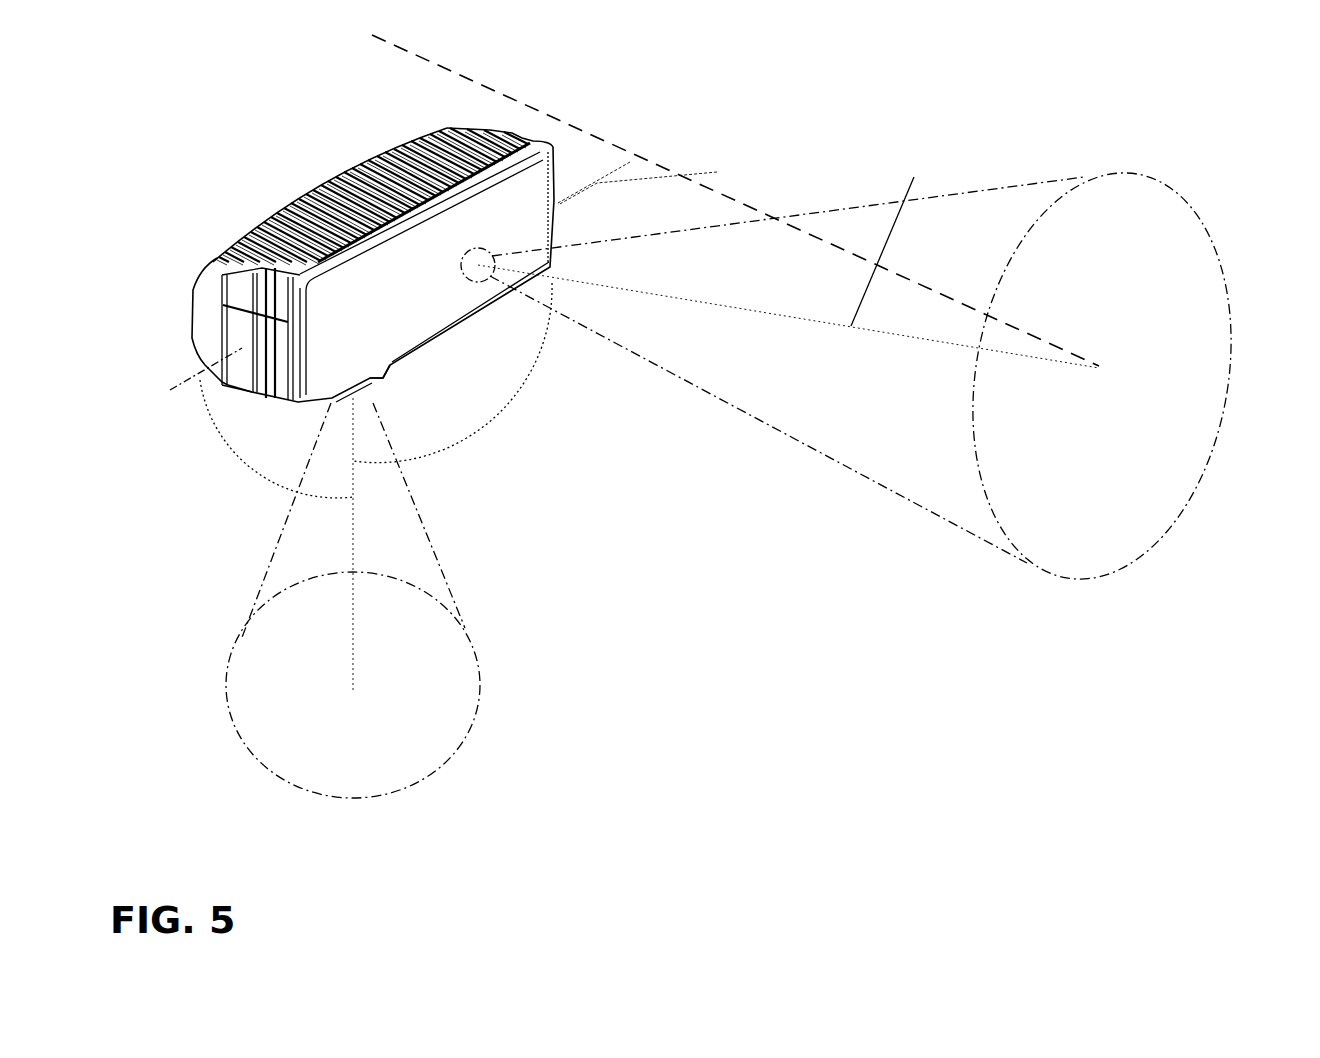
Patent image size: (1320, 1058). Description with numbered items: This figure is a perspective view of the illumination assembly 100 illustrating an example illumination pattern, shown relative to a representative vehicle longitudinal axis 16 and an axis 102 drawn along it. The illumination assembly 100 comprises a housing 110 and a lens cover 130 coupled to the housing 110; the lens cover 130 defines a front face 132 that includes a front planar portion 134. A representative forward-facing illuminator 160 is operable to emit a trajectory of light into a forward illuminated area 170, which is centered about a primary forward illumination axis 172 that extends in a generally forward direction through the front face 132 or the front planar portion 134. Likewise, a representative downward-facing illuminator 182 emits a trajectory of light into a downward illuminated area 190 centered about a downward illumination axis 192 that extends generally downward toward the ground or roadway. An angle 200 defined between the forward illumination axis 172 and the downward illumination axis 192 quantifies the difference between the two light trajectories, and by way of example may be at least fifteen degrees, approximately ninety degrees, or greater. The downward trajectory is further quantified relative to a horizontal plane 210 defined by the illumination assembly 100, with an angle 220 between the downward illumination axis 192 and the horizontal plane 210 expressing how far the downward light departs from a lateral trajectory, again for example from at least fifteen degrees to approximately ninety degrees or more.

The illumination assembly 100 is at (262, 160).
The optical axis 102 is at (468, 110).
The housing 110 is at (238, 298).
The lens cover 130 is at (542, 143).
The front face 132 is at (530, 190).
The front planar portion 134 is at (508, 203).
The forward-facing illuminator 160 is at (460, 247).
The forward illuminated area 170 is at (1225, 296).
The forward illumination axis 172 is at (892, 236).
The downward-facing illuminator 182 is at (382, 392).
The downward illuminated area 190 is at (462, 740).
The downward illumination axis 192 is at (355, 655).
The angle 200 is at (527, 373).
The horizontal plane 210 is at (183, 450).
The angle 220 is at (263, 477).
The vehicle longitudinal axis 16 is at (751, 208).